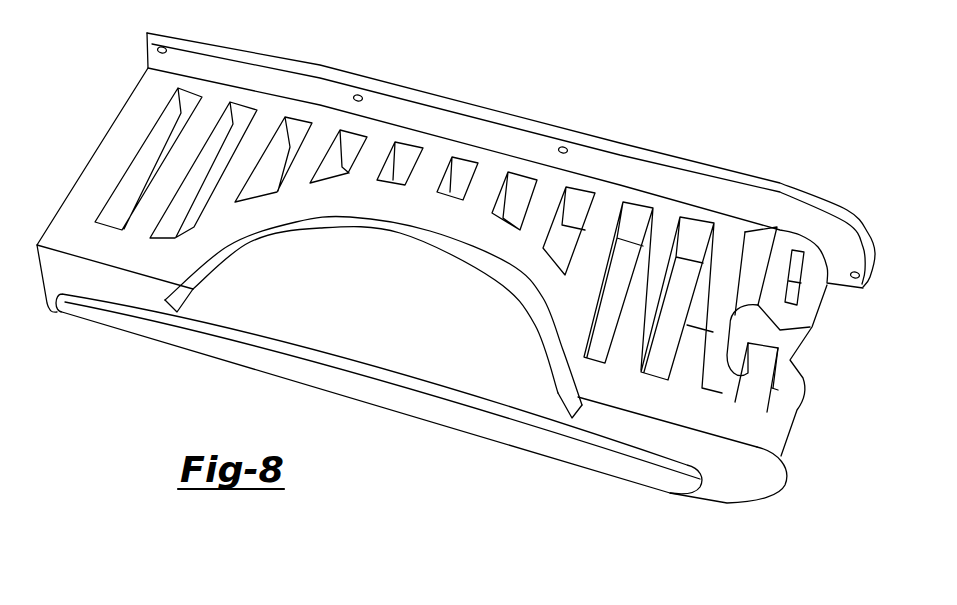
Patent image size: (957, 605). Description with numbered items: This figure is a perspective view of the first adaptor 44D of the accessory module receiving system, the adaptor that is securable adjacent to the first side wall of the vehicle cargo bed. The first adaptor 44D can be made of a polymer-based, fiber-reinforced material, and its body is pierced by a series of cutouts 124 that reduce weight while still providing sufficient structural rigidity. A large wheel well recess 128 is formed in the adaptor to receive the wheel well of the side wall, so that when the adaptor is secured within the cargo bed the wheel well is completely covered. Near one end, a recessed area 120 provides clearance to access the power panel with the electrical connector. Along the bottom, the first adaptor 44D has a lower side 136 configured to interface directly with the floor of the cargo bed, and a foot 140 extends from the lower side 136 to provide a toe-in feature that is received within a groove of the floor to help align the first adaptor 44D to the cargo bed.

The first adaptor 44D is at (723, 177).
The recessed area 120 is at (797, 342).
The cutouts 124 is at (185, 113).
The wheel well recess 128 is at (485, 347).
The lower side 136 is at (733, 477).
The foot 140 is at (647, 473).